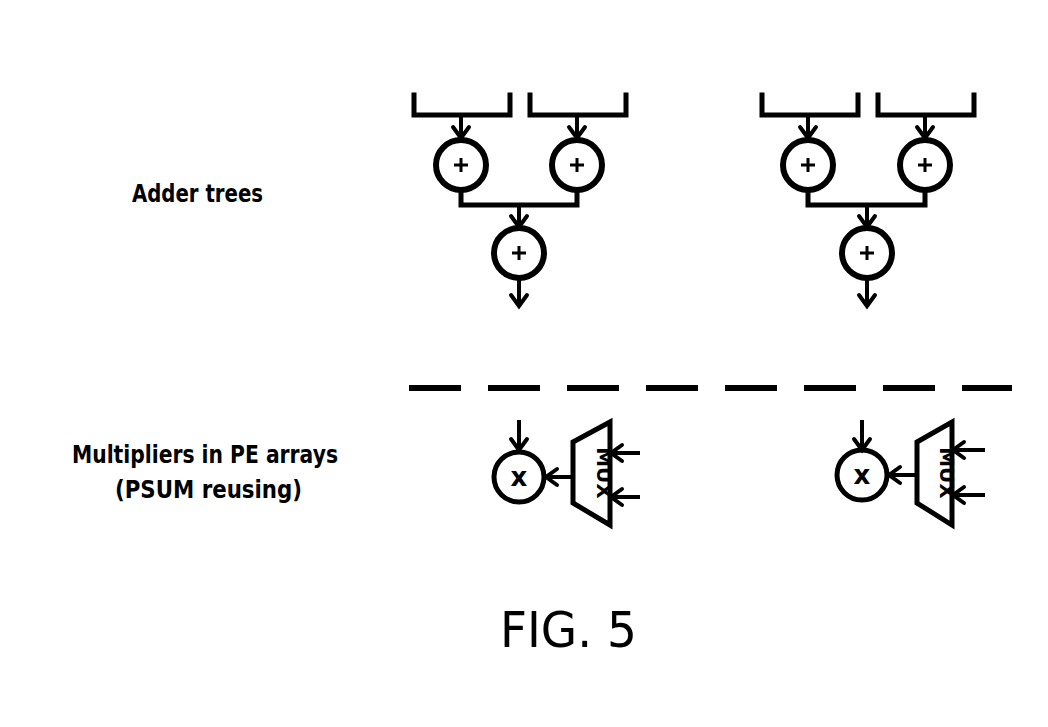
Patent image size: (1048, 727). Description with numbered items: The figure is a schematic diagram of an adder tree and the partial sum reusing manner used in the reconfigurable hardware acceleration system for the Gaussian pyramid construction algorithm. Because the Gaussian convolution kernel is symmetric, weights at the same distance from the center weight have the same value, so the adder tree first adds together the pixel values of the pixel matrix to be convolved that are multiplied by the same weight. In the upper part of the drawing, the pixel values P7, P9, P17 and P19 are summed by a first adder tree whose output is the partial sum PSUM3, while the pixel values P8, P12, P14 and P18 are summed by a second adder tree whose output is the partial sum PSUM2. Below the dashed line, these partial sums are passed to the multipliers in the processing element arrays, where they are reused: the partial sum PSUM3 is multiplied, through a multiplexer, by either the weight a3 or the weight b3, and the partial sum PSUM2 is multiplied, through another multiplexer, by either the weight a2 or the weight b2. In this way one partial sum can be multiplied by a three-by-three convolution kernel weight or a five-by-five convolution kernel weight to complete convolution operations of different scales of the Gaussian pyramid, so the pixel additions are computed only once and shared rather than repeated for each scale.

The product P7 input P7 is at (428, 59).
The product P9 input P9 is at (496, 59).
The product P17 input P17 is at (553, 59).
The product P19 input P19 is at (610, 59).
The product P8 input P8 is at (778, 59).
The product P12 input P12 is at (834, 59).
The product P14 input P14 is at (902, 59).
The product P18 input P18 is at (959, 59).
The partial sum PSUM3 output PSUM3 is at (522, 343).
The partial sum PSUM2 output PSUM2 is at (872, 345).
The multiplier input a3 is at (650, 454).
The weight b3 is at (650, 496).
The multiplier input a2 is at (993, 452).
The weight b2 is at (993, 494).